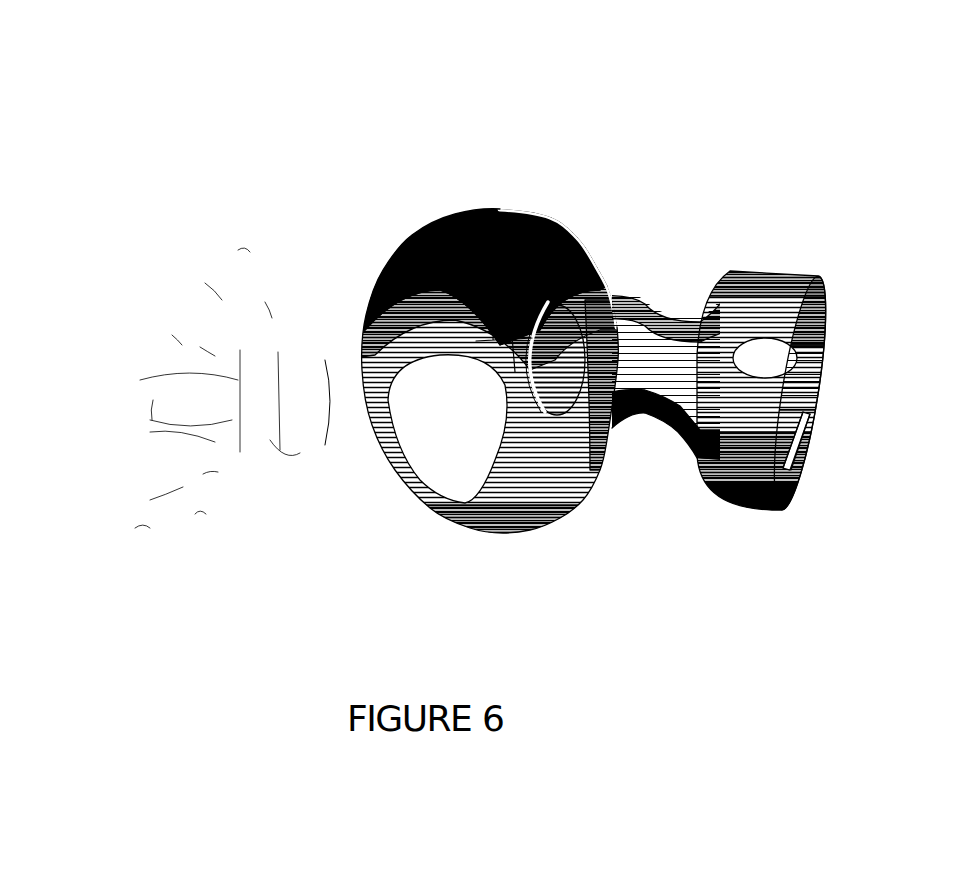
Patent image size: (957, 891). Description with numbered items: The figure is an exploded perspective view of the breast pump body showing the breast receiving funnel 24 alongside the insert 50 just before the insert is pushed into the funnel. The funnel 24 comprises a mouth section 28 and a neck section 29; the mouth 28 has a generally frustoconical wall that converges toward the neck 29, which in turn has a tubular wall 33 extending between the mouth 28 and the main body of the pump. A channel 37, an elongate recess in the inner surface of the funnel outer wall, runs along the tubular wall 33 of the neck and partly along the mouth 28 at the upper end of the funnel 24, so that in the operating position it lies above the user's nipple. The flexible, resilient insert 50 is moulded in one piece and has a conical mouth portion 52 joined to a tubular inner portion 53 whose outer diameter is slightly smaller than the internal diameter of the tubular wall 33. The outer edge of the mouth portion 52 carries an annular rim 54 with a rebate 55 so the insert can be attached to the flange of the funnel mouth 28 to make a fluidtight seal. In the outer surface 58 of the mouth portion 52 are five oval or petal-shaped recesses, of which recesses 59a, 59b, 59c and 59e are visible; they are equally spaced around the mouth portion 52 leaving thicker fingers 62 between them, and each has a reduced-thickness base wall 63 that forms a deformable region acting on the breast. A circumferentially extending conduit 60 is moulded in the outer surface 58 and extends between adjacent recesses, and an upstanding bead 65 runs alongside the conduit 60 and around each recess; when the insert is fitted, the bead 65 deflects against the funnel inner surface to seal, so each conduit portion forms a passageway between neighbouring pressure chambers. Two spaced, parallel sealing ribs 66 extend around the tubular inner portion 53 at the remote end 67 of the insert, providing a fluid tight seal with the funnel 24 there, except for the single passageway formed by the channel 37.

The breast receiving funnel 24 is at (480, 168).
The mouth section 28 is at (480, 452).
The neck section 29 is at (552, 413).
The tubular wall 33 is at (548, 258).
The channel 37 is at (513, 237).
The insert 50 is at (198, 168).
The conical mouth portion 52 is at (238, 250).
The tubular inner portion 53 is at (253, 453).
The annular rim 54 is at (143, 528).
The rebate 55 is at (200, 514).
The outer surface 58 is at (172, 335).
The recess 59a is at (153, 400).
The recess 59b is at (203, 282).
The recess 59c is at (265, 302).
The recess 59e is at (203, 474).
The circumferentially extending conduit 60 is at (223, 362).
The fingers 62 is at (200, 347).
The base wall 63 is at (183, 487).
The upstanding bead 65 is at (213, 440).
The sealing ribs 66 is at (280, 345).
The remote end 67 is at (300, 453).